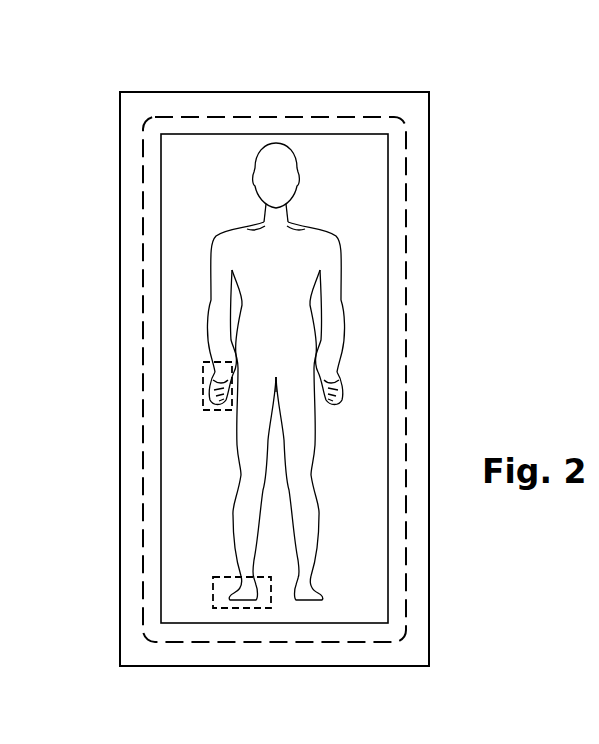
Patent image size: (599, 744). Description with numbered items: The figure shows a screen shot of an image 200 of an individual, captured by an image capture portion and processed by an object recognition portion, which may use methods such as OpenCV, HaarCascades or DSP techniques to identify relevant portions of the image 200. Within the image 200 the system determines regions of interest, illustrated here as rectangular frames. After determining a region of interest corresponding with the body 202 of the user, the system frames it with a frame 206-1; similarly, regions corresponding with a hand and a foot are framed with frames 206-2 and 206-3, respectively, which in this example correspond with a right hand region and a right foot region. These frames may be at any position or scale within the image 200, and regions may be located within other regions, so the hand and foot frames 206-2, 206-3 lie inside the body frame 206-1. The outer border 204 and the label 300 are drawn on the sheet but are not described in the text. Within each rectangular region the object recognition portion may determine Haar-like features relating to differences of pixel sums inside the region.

The image 200 is at (200, 72).
The body 202 is at (322, 222).
The outer frame / housing 204 is at (429, 255).
The frame 206-1 is at (406, 389).
The frame 206-2 is at (202, 389).
The frame 206-3 is at (213, 588).
The sheet reference / system 300 is at (557, 732).